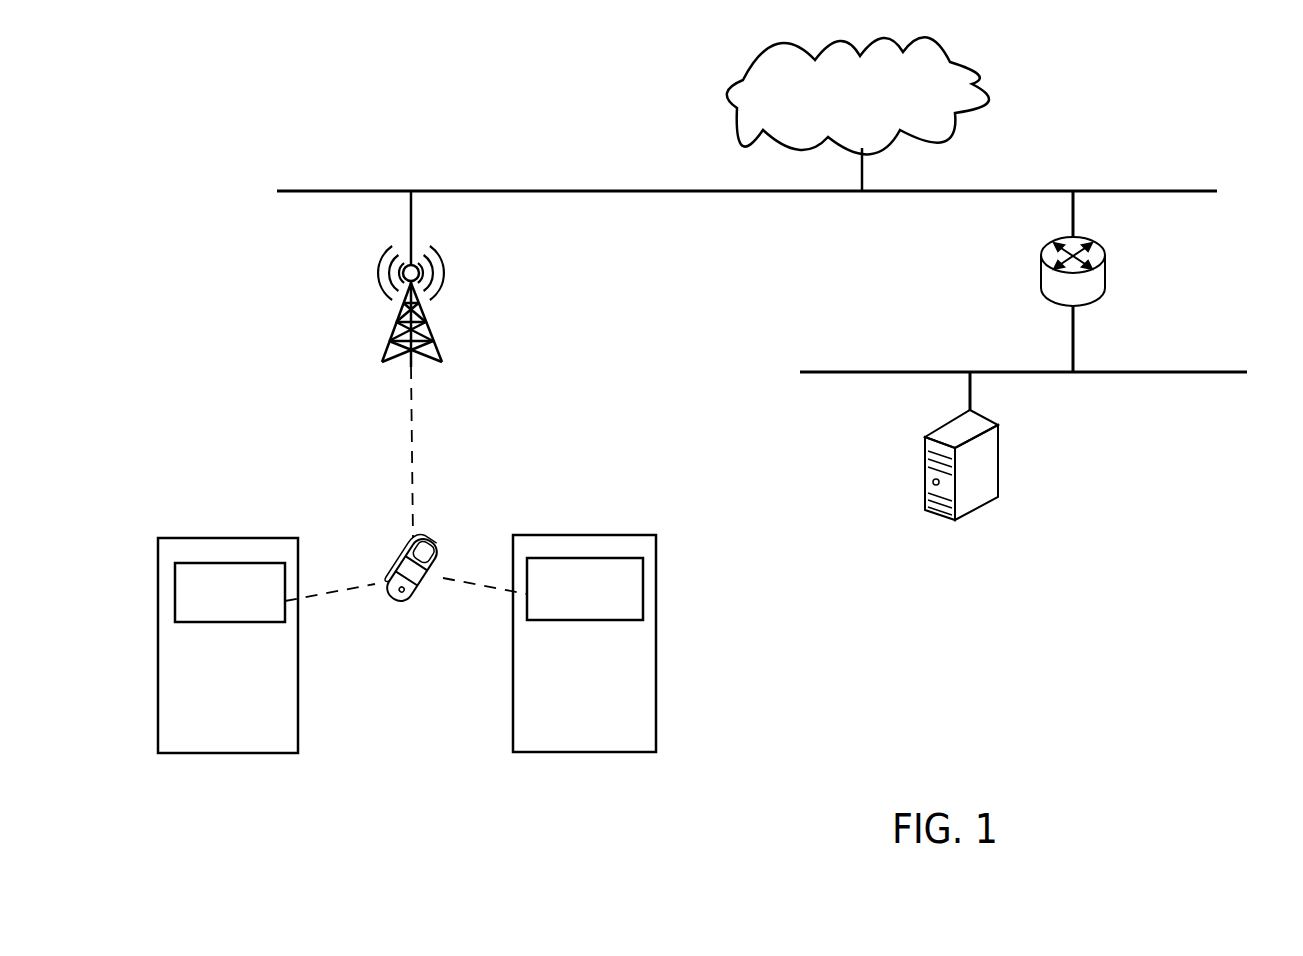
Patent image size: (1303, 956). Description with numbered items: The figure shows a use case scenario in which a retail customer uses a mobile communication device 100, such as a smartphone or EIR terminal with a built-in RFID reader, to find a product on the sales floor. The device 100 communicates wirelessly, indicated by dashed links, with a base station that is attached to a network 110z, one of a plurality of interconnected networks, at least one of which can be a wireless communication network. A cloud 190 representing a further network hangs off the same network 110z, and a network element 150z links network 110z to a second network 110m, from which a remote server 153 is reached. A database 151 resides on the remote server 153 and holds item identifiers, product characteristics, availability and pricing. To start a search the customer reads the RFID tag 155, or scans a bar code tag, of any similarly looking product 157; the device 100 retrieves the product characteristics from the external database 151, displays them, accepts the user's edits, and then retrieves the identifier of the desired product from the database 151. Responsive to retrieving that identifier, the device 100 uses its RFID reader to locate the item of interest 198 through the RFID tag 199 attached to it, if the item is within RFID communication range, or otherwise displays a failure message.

The mobile communication device 100 is at (392, 486).
The network 110z is at (747, 174).
The network 110m is at (1023, 354).
The router 150z is at (1104, 281).
The database 151 is at (992, 467).
The remote server 153 is at (992, 467).
The RFID tag 155 is at (275, 592).
The similarly looking product 157 is at (228, 645).
The Internet 190 is at (858, 114).
The item of interest 198 is at (584, 643).
The RFID tag 199 is at (543, 589).